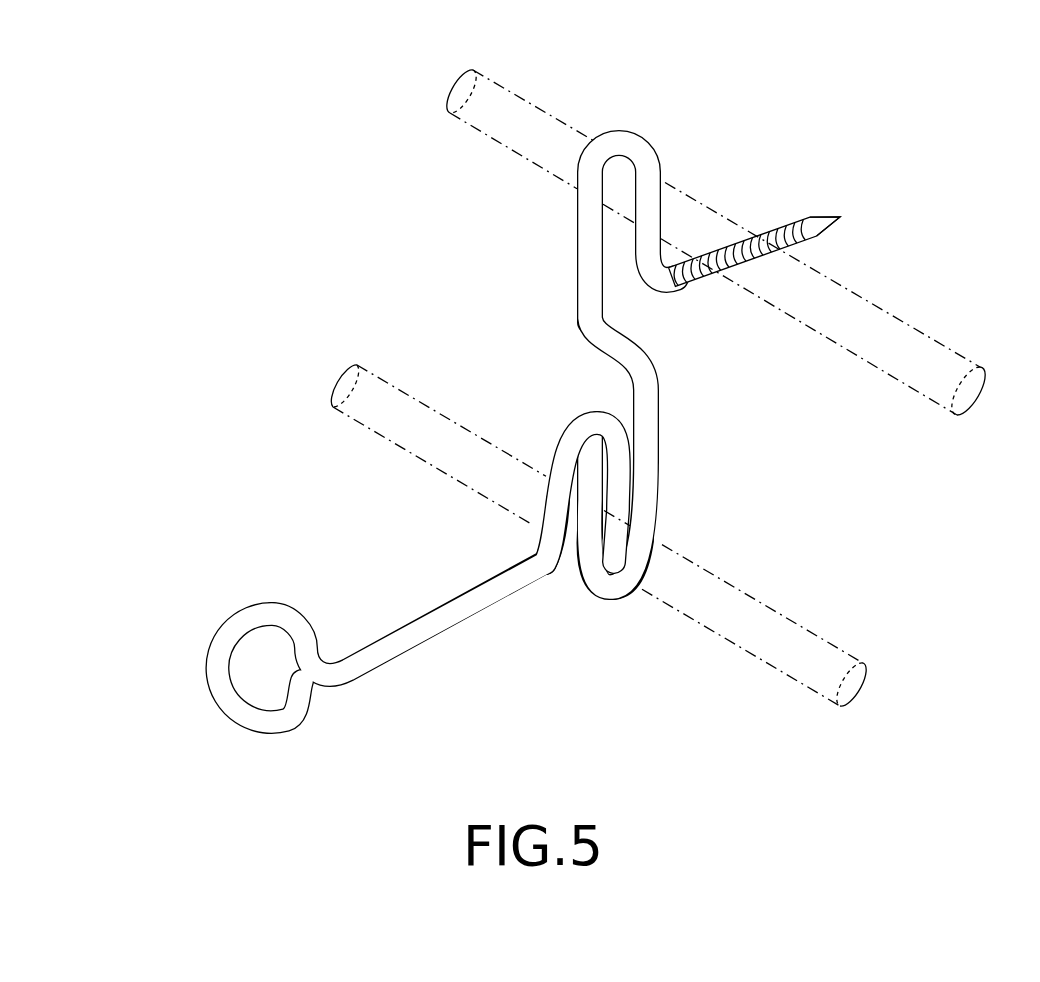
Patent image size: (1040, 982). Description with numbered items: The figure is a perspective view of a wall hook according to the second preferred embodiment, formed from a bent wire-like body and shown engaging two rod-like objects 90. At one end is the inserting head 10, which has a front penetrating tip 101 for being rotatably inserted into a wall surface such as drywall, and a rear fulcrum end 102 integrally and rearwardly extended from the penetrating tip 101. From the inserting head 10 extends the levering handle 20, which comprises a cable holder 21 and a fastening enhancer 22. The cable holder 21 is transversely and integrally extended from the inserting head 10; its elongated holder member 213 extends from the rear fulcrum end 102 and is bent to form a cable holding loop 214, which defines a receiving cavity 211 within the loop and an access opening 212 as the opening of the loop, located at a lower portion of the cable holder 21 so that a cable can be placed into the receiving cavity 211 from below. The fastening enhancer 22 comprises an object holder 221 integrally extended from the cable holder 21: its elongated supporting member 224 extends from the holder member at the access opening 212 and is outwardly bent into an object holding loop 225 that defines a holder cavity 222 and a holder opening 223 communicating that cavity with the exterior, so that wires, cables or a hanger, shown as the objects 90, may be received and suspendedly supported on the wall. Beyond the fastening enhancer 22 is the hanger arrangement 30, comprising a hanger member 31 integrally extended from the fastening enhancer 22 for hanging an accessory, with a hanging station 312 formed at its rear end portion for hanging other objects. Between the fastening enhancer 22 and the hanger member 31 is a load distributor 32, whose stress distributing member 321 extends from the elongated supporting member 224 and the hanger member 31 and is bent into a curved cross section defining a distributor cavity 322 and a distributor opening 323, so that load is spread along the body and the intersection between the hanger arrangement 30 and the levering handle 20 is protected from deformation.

The inserting head 10 is at (830, 202).
The front penetrating tip 101 is at (832, 213).
The rear fulcrum end 102 is at (680, 252).
The levering handle 20 is at (719, 386).
The cable holder 21 is at (647, 226).
The receiving cavity 211 is at (616, 226).
The access opening 212 is at (672, 319).
The elongated holder member 213 is at (593, 198).
The cable holding loop 214 is at (612, 162).
The fastening enhancer 22 is at (633, 524).
The object holder 221 is at (676, 500).
The holder cavity 222 is at (612, 575).
The holder opening 223 is at (614, 408).
The elongated supporting member 224 is at (655, 555).
The object holding loop 225 is at (638, 510).
The hanger arrangement 30 is at (398, 612).
The hanger member 31 is at (428, 628).
The hanging station 312 is at (277, 610).
The load distributor 32 is at (482, 550).
The stress distributing member 321 is at (597, 437).
The distributor cavity 322 is at (577, 483).
The distributor opening 323 is at (569, 575).
The object 90 is at (503, 130).